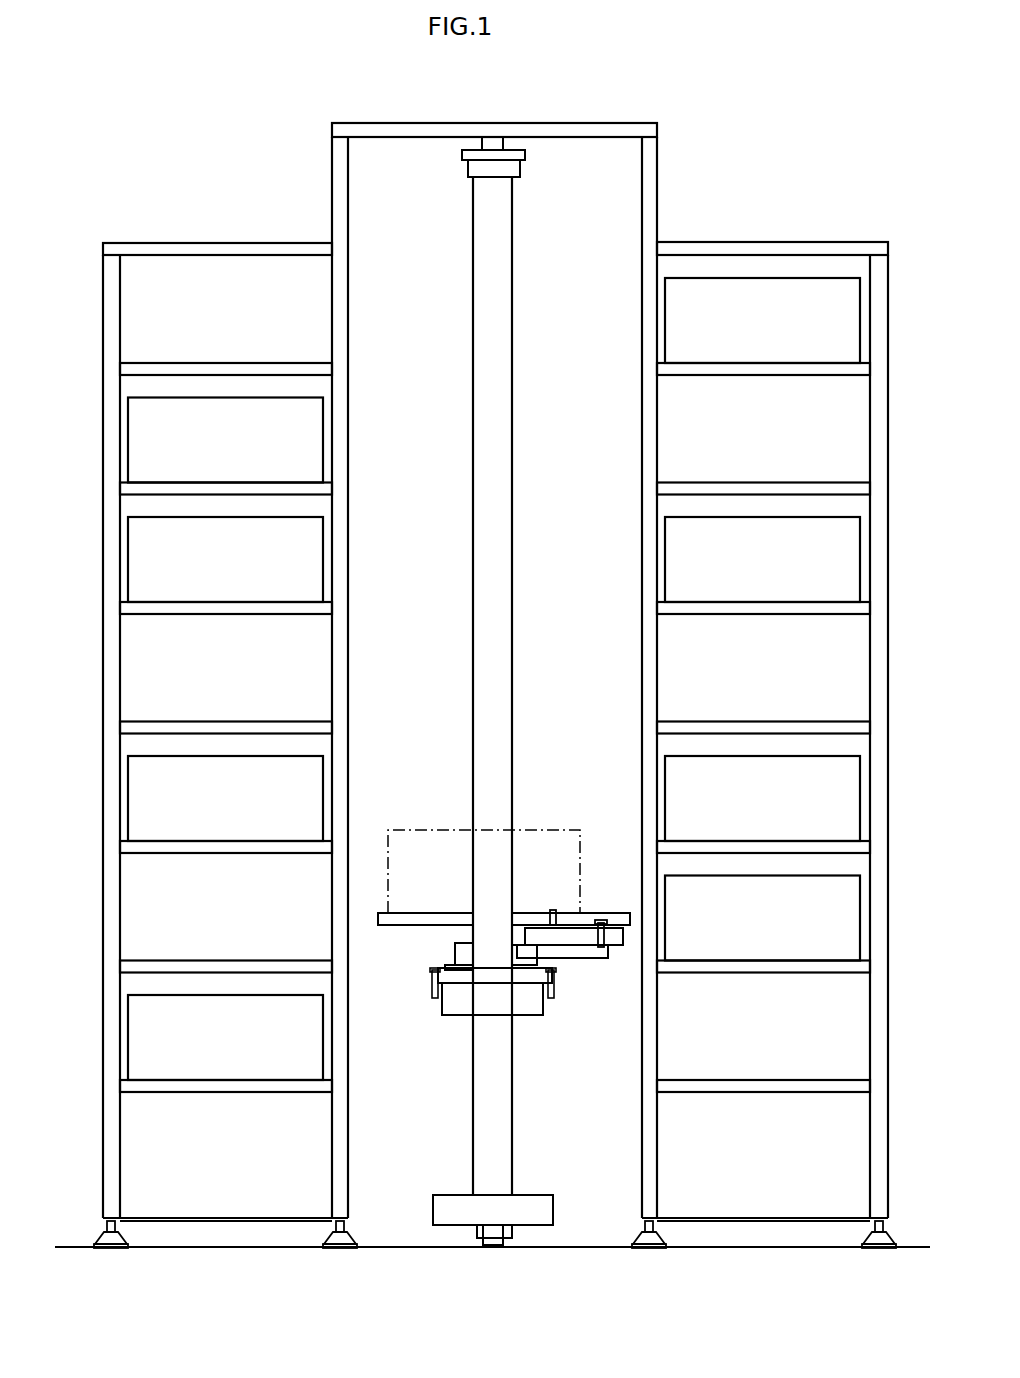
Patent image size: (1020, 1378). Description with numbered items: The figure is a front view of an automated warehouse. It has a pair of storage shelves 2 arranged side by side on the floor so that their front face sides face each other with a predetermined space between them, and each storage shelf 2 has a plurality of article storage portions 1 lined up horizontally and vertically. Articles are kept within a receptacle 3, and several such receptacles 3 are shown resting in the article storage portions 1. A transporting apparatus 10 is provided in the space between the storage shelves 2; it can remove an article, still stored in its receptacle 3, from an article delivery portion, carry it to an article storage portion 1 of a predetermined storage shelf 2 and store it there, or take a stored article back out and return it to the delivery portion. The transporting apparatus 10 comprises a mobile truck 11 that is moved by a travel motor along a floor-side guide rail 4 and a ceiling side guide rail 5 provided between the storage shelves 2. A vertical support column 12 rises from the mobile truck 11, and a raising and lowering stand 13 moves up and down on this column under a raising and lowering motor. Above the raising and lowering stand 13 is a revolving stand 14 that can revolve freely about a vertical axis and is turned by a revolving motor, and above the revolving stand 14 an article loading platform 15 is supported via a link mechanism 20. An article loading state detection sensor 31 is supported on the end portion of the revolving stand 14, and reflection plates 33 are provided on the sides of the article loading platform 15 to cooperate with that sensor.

The article storage portion 1 is at (155, 388).
The storage shelf 2 is at (193, 243).
The receptacle 3 is at (303, 445).
The floor-side guide rail 4 is at (493, 1240).
The ceiling side guide rail 5 is at (497, 150).
The transporting apparatus 10 is at (540, 1098).
The mobile truck 11 is at (457, 1202).
The vertical support column 12 is at (500, 407).
The raising and lowering stand 13 is at (528, 1010).
The revolving stand 14 is at (463, 1000).
The article loading platform 15 is at (412, 927).
The link mechanism 20 is at (447, 948).
The article loading state detection sensor 31 is at (600, 912).
The reflection plate 33 is at (567, 912).